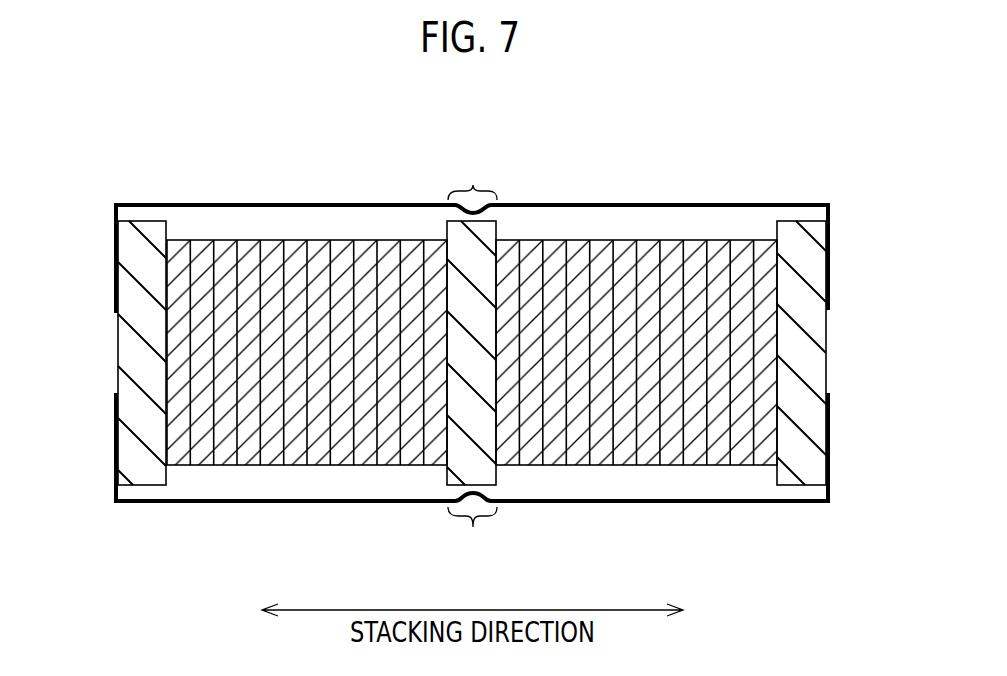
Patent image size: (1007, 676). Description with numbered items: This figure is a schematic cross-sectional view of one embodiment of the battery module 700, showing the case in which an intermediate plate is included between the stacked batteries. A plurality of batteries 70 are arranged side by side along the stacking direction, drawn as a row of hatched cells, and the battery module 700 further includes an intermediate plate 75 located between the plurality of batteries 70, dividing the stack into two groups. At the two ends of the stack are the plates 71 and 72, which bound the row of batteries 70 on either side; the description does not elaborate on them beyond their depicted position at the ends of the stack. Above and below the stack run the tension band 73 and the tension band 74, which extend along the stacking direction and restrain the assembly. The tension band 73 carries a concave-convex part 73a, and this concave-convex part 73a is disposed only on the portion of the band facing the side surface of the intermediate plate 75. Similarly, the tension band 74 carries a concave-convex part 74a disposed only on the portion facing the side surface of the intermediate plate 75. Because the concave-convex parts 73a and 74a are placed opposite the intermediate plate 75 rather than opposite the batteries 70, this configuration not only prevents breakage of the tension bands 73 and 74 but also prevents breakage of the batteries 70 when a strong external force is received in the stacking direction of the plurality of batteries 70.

The battery module 700 is at (122, 170).
The batteries 70 is at (270, 468).
The first end plate 71 is at (137, 353).
The second end plate 72 is at (807, 367).
The tension band 73 is at (352, 203).
The concave-convex part 73a is at (472, 173).
The tension band 74 is at (358, 503).
The concave-convex part 74a is at (472, 535).
The intermediate plate 75 is at (462, 248).